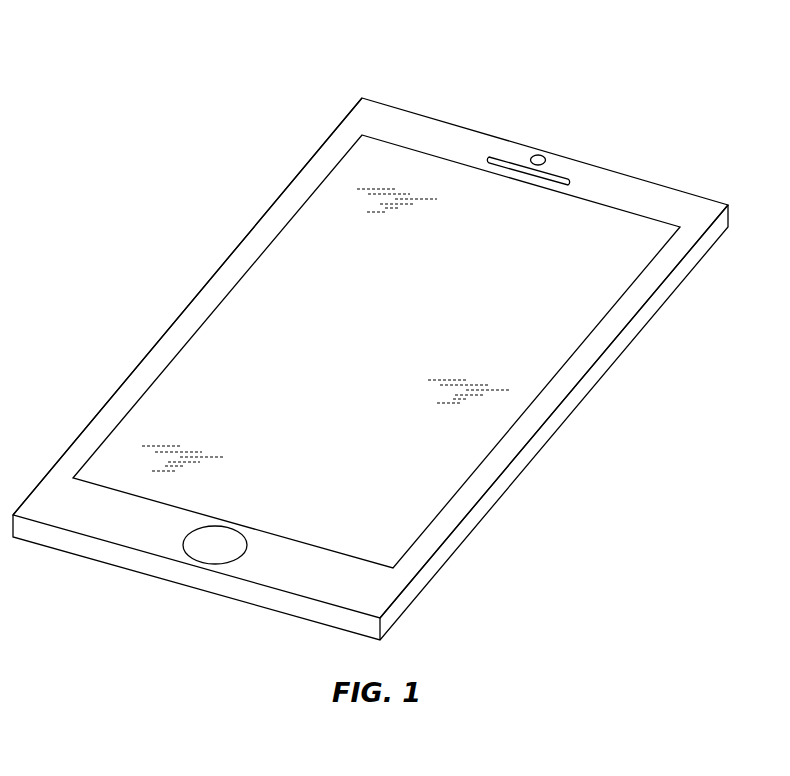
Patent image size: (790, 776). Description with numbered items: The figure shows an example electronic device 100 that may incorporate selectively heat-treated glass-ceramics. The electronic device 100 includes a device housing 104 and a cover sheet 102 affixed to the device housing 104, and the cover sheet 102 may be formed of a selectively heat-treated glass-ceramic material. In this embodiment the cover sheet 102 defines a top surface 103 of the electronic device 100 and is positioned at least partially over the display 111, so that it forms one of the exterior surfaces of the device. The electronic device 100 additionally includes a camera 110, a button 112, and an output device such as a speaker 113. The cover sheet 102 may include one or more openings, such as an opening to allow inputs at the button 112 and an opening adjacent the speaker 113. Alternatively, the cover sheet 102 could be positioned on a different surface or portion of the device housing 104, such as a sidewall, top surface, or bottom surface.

The electronic device 100 is at (198, 54).
The cover sheet 102 is at (324, 142).
The top surface 103 is at (270, 231).
The device housing 104 is at (609, 358).
The camera 110 is at (538, 155).
The display 111 is at (267, 285).
The button 112 is at (197, 564).
The speaker 113 is at (488, 158).